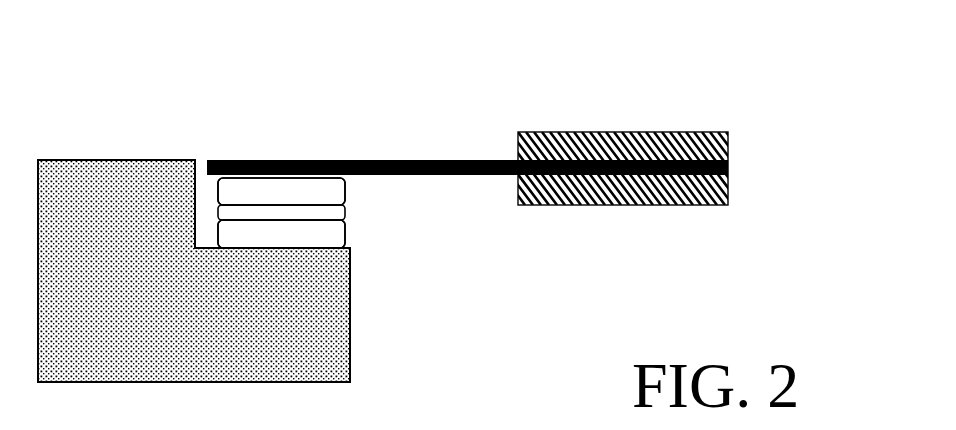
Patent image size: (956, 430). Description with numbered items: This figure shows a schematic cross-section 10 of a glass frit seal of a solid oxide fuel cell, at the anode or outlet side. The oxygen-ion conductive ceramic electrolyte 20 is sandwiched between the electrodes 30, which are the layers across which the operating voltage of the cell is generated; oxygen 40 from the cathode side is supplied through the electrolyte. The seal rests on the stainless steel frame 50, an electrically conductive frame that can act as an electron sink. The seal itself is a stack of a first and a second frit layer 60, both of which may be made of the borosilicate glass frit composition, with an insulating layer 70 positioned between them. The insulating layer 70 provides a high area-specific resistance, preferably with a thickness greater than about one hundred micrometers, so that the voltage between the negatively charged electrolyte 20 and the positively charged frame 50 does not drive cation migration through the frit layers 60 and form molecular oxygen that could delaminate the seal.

The cross-section 10 is at (624, 66).
The electrolyte 20 is at (740, 167).
The electrodes 30 is at (740, 148).
The oxygen 40 is at (362, 152).
The stainless steel frame 50 is at (194, 271).
The frit layer 60 is at (206, 194).
The insulating layer 70 is at (355, 216).